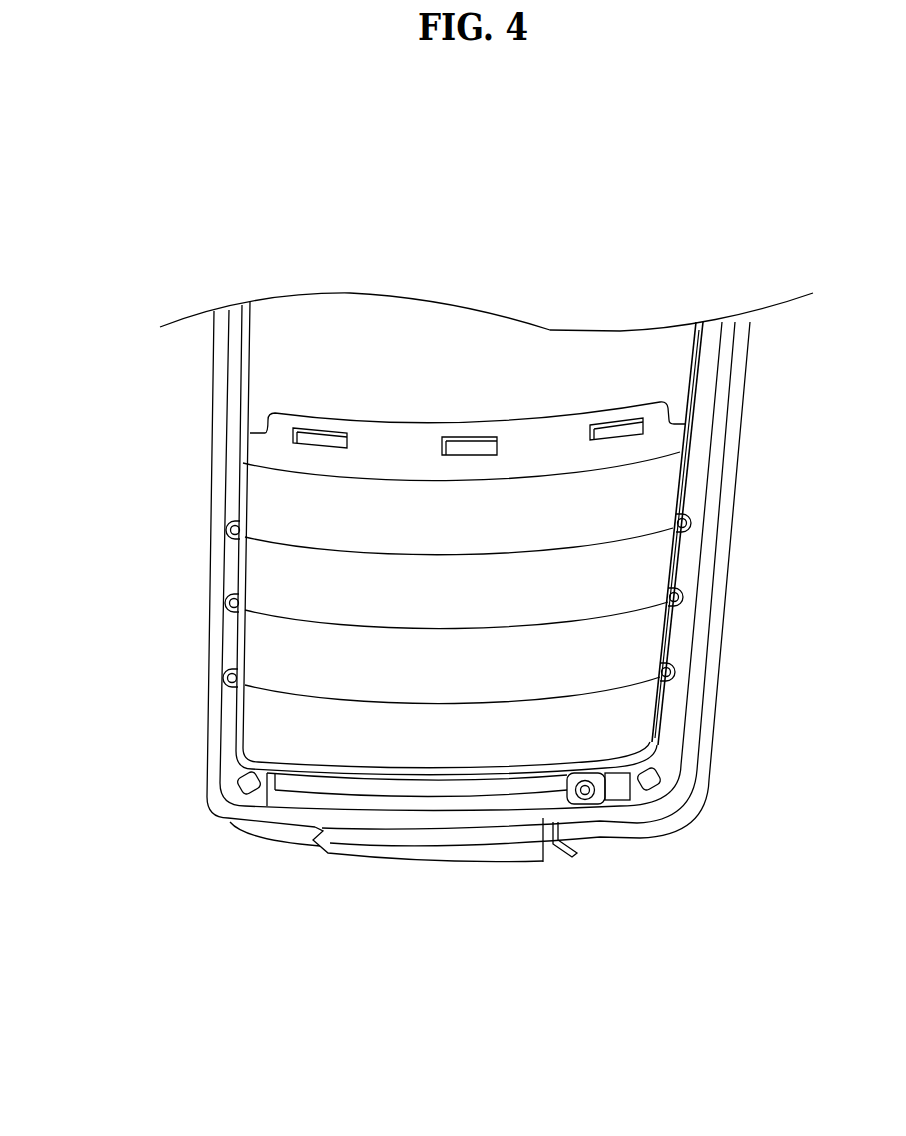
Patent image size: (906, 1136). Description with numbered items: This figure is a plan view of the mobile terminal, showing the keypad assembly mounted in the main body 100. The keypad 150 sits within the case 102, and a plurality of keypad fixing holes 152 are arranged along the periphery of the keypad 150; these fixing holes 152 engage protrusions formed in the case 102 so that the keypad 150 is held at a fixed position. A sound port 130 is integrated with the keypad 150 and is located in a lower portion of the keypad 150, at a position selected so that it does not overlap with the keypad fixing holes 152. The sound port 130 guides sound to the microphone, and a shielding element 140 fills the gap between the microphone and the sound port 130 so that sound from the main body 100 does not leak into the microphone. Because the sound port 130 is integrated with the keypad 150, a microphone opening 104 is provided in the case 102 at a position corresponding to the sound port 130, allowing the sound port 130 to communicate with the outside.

The main body 100 is at (194, 448).
The case 102 is at (708, 495).
The microphone opening 104 is at (563, 800).
The sound port 130 is at (625, 800).
The shielding element 140 is at (587, 806).
The keypad 150 is at (647, 643).
The keypad fixing holes 152 is at (322, 455).